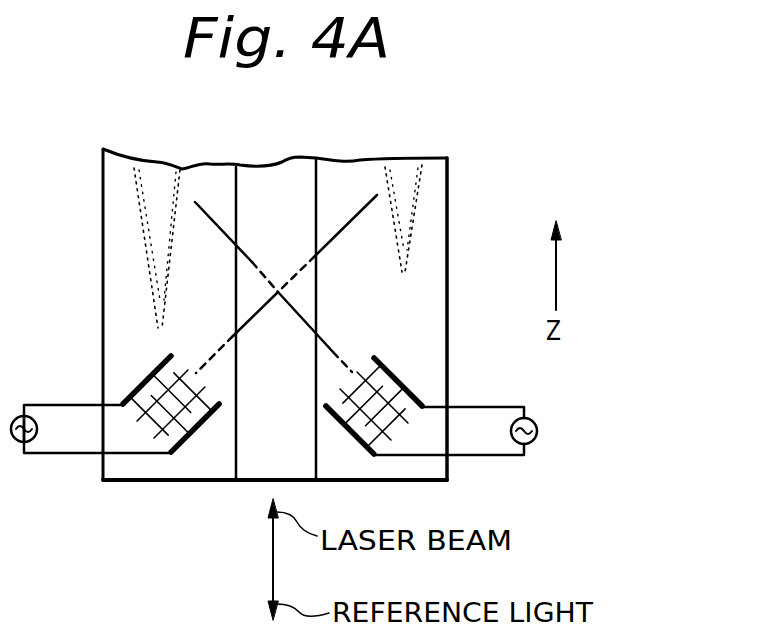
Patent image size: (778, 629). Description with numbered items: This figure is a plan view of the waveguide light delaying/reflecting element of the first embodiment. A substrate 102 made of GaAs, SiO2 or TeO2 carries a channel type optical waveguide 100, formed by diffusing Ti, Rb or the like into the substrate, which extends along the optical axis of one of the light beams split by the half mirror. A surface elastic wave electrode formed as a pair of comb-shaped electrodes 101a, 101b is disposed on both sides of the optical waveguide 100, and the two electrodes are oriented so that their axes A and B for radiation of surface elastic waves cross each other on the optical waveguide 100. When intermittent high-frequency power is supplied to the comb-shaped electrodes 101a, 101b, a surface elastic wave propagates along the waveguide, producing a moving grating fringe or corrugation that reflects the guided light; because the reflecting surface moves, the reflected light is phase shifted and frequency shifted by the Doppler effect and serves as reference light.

The optical waveguide 100 is at (284, 163).
The substrate 102 is at (447, 186).
The comb-shaped electrode 101a is at (168, 456).
The comb-shaped electrode 101b is at (378, 458).
The axis for radiation of surface elastic waves A is at (370, 203).
The axis for radiation of surface elastic waves B is at (199, 207).